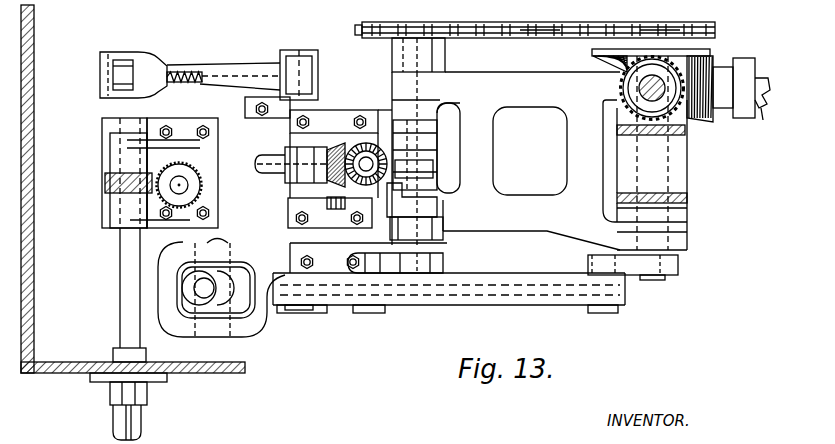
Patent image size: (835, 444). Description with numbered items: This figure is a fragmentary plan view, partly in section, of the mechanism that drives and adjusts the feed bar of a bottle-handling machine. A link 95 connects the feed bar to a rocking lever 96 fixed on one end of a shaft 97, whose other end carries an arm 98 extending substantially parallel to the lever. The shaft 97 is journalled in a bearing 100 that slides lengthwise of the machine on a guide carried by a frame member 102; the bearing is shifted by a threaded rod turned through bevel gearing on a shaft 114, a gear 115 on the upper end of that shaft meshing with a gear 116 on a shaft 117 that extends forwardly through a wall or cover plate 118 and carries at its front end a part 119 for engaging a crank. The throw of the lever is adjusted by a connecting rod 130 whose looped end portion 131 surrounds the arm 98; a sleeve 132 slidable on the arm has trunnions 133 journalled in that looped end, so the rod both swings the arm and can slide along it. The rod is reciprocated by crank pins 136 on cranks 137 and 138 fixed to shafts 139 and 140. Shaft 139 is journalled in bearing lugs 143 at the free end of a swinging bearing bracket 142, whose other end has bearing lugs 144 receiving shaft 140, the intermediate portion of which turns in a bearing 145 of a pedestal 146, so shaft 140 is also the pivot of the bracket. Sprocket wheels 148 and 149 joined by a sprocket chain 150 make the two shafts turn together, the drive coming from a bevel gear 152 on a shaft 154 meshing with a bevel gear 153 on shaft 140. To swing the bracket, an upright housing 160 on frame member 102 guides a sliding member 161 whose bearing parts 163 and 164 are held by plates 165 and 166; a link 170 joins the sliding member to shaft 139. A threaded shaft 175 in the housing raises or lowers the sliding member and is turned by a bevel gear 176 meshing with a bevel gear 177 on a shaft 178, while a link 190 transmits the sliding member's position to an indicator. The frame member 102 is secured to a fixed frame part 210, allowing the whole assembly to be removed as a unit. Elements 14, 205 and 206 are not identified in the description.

The main plate 14 is at (263, 160).
The link 95 is at (178, 72).
The lever 96 is at (228, 72).
The shaft 97 is at (305, 52).
The arm 98 is at (190, 291).
The bearing 100 is at (337, 106).
The frame member 102 is at (303, 198).
The shaft 114 is at (192, 170).
The gear 115 is at (181, 186).
The gear 116 is at (105, 182).
The shaft 117 is at (120, 290).
The wall or cover plate 118 is at (206, 371).
The crank engaging means 119 is at (143, 425).
The connecting rod 130 is at (488, 303).
The looped end portion 131 is at (173, 324).
The sleeve 132 is at (233, 297).
The trunnions or bearing lugs 133 is at (217, 238).
The crank pins 136 is at (380, 313).
The crank 137 is at (445, 263).
The crank 138 is at (588, 262).
The shaft 139 is at (393, 72).
The shaft 140 is at (658, 279).
The bearing member or bracket 142 is at (608, 154).
The bearing lugs or projections 143 is at (431, 67).
The bearing lugs or extensions 144 is at (681, 118).
The bearing 145 is at (681, 182).
The bearing pedestal 146 is at (618, 205).
The sprocket wheel 148 is at (440, 33).
The sprocket wheel 149 is at (657, 29).
The sprocket chain 150 is at (552, 29).
The bevel gear 152 is at (715, 67).
The bevel gear 153 is at (707, 48).
The shaft 154 is at (762, 111).
The bearing member or housing 160 is at (393, 125).
The sliding member 161 is at (420, 137).
The bearing part 163 is at (391, 130).
The bearing part 164 is at (392, 209).
The plate 165 is at (393, 128).
The plate 166 is at (397, 209).
The link 170 is at (424, 173).
The threaded shaft 175 is at (363, 168).
The bevel gear 176 is at (361, 145).
The bevel gear 177 is at (341, 149).
The shaft 178 is at (267, 158).
The link 190 is at (333, 203).
The shaft 205 is at (638, 88).
The pinion 206 is at (620, 106).
The fixed frame part 210 is at (35, 248).